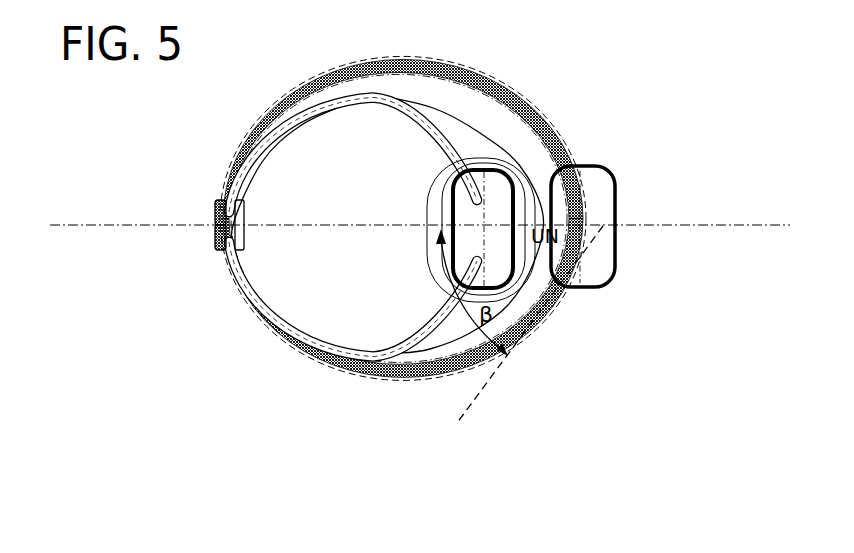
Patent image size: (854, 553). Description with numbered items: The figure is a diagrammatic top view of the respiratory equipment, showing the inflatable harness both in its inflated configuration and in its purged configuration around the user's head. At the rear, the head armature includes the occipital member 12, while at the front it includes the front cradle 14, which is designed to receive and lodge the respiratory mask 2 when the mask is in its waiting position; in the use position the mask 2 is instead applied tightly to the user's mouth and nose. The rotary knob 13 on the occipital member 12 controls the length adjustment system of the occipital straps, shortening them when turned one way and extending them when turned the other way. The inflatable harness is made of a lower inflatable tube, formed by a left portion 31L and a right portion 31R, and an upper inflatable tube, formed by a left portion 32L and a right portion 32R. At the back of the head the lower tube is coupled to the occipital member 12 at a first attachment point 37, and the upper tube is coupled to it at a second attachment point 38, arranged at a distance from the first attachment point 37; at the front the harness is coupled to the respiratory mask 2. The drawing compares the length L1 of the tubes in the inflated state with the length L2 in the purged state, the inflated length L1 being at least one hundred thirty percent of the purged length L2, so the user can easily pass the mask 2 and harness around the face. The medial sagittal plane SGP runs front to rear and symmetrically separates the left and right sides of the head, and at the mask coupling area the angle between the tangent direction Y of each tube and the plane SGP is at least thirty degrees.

The respiratory mask 2 is at (621, 215).
The occipital member 12 is at (244, 222).
The rotary knob 13 is at (191, 214).
The front cradle 14 is at (426, 214).
The left portion of the lower inflatable tube 31L is at (420, 197).
The left portion of the upper inflatable tube 32L is at (420, 197).
The right portion of the lower inflatable tube 31R is at (375, 321).
The right portion of the upper inflatable tube 32R is at (432, 374).
The first attachment point 37 is at (226, 243).
The second attachment point 38 is at (221, 203).
The length of the inflatable tubes in the inflated state L1 is at (524, 103).
The length of the inflatable tubes in the purged state L2 is at (450, 148).
The medial sagittal plane SGP is at (727, 223).
The tangent direction of the tube at the mask attachment Y is at (487, 390).